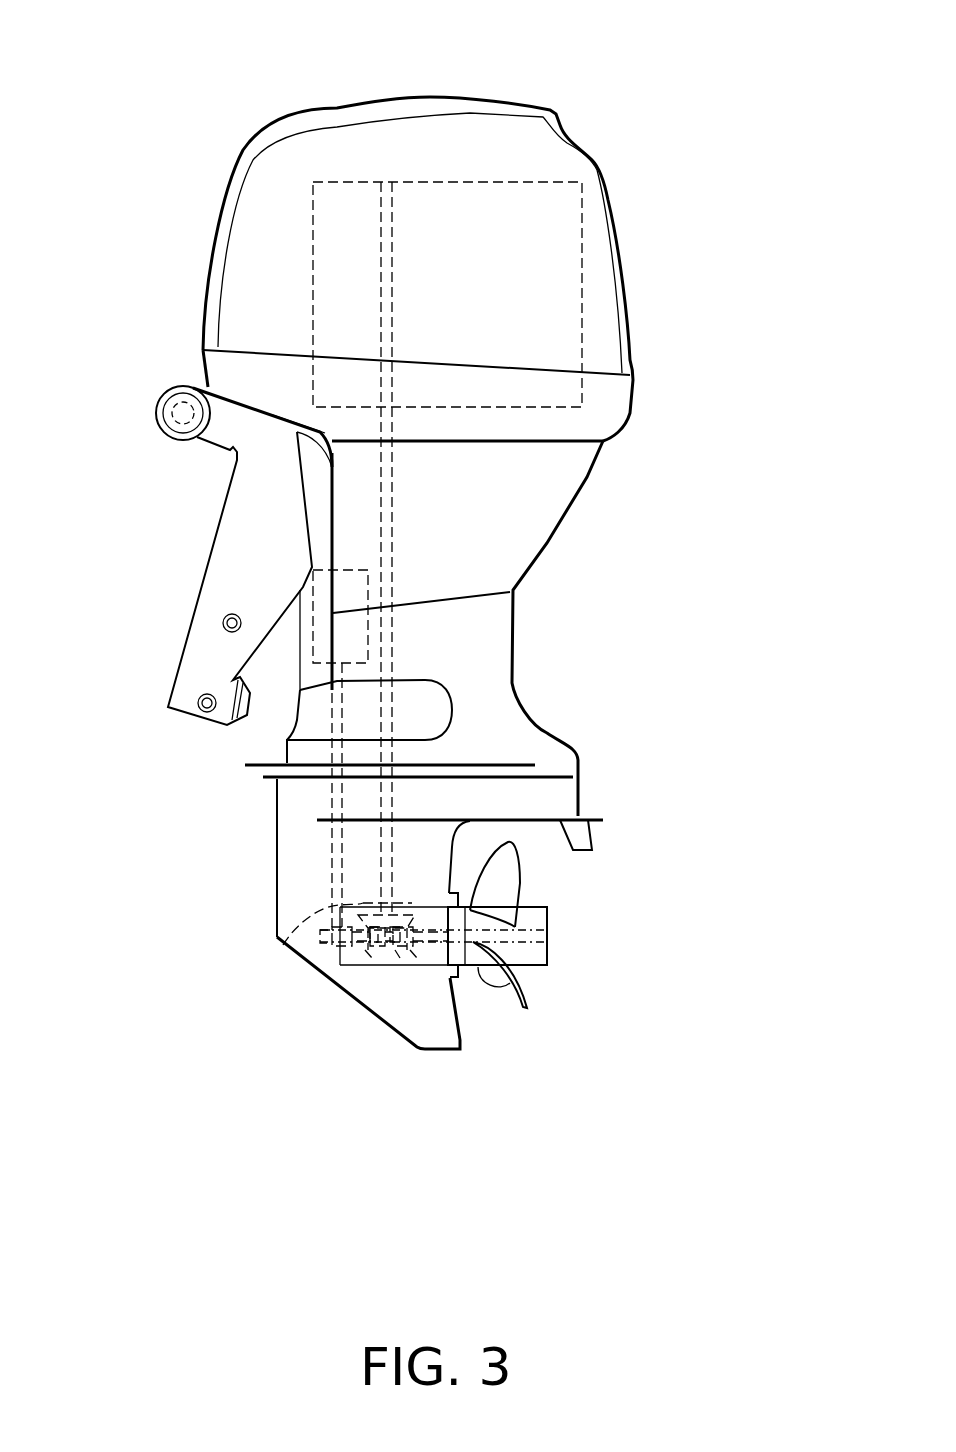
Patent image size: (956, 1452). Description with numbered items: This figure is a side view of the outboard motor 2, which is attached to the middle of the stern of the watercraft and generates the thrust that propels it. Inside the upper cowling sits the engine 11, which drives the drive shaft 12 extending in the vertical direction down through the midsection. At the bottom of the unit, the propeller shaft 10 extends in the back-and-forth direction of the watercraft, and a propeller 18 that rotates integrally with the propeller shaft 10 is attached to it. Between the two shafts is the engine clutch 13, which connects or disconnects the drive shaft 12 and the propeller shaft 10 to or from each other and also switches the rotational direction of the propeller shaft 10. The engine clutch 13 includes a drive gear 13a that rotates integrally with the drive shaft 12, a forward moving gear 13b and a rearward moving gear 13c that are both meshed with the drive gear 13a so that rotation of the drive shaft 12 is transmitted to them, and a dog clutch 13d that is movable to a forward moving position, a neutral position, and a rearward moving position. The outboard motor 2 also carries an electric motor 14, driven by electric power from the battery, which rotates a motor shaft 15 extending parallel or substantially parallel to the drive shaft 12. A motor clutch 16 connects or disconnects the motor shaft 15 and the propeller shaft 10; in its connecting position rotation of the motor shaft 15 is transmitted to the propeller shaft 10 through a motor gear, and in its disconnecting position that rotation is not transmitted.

The outboard motor 2 is at (207, 153).
The propeller shaft 10 is at (460, 1015).
The engine 11 is at (343, 182).
The drive shaft 12 is at (395, 537).
The engine clutch 13 is at (350, 957).
The drive gear 13a is at (363, 902).
The forward moving gear 13b is at (363, 950).
The rearward moving gear 13c is at (410, 953).
The dog clutch 13d is at (397, 950).
The electric motor 14 is at (300, 640).
The motor shaft 15 is at (333, 795).
The motor clutch 16 is at (323, 929).
The propeller 18 is at (492, 960).